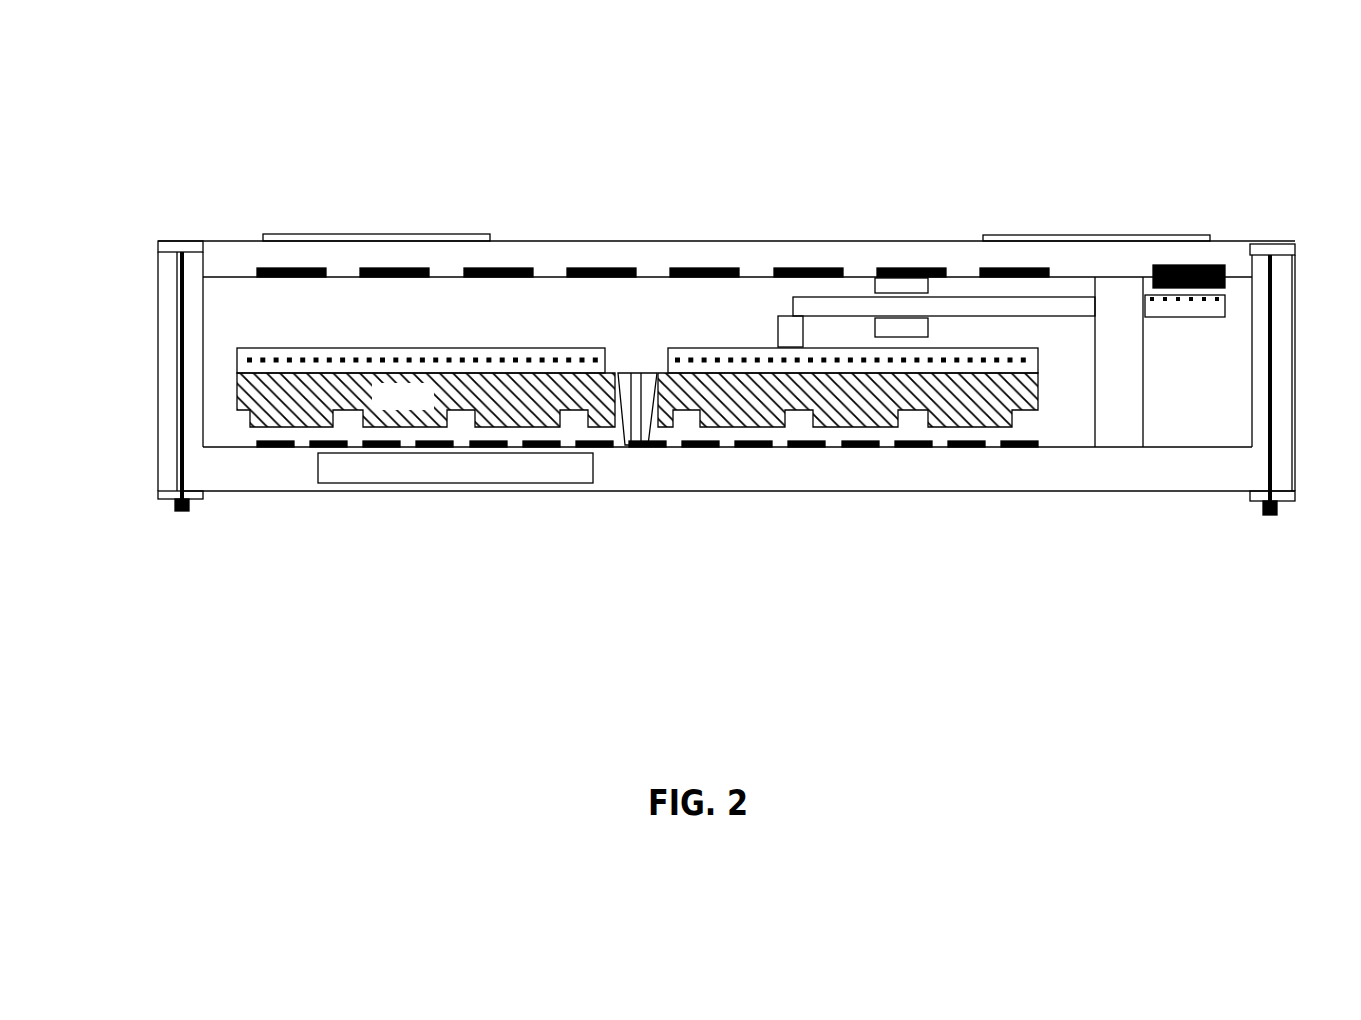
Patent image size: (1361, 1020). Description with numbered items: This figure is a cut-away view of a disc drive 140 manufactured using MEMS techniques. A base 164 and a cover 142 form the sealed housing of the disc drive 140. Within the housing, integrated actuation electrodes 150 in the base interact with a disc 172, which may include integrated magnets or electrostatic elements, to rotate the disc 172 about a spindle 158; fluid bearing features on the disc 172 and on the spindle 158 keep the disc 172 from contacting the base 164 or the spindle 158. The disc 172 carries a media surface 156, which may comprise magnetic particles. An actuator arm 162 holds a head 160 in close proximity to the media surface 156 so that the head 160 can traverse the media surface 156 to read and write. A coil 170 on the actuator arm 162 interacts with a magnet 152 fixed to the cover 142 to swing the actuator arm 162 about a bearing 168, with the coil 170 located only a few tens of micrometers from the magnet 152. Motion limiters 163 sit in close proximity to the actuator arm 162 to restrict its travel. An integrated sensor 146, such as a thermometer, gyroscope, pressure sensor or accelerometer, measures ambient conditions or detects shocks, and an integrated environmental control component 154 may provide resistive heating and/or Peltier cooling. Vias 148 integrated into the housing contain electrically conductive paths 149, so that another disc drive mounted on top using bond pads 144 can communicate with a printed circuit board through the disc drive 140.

The disc drive 140 is at (158, 116).
The cover 142 is at (858, 253).
The bond pads 144 is at (385, 222).
The integrated sensor 146 is at (517, 474).
The vias 148 is at (178, 242).
The electrically conductive paths 149 is at (177, 512).
The integrated actuation electrodes 150 is at (907, 447).
The magnet 152 is at (1220, 264).
The integrated environmental control component 154 is at (676, 266).
The media surface 156 is at (428, 347).
The spindle 158 is at (640, 373).
The head 160 is at (778, 338).
The actuator arm 162 is at (1025, 320).
The motion limiters 163 is at (903, 328).
The base 164 is at (783, 484).
The bearing 168 is at (1123, 372).
The coil 170 is at (1160, 303).
The disc 172 is at (423, 408).